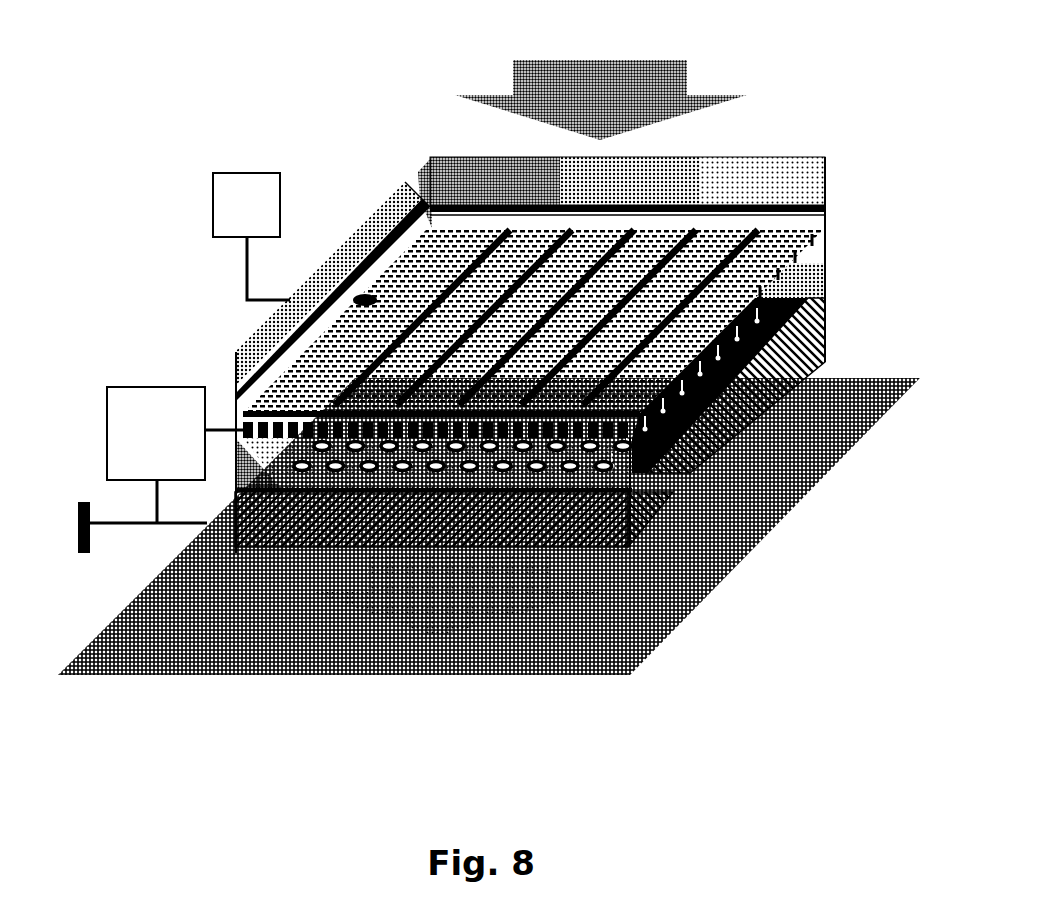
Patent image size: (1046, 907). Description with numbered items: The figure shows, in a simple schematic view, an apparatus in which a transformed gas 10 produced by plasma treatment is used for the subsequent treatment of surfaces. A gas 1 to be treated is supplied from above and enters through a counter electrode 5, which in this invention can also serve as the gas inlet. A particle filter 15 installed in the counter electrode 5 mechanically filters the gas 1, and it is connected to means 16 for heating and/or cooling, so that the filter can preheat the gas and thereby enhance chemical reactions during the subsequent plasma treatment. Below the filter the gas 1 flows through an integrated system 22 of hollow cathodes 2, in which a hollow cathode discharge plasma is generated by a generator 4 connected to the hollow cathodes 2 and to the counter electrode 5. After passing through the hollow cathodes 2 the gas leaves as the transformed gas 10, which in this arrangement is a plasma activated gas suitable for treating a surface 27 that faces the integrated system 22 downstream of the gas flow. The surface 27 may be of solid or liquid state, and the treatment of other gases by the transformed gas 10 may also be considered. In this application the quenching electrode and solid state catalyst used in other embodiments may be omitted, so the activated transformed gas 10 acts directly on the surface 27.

The gas to be treated 1 is at (688, 72).
The hollow cathode 2 is at (605, 466).
The generator 4 is at (165, 400).
The counter electrode 5 is at (770, 162).
The transformed gas 10 is at (415, 612).
The particle filter 15 is at (430, 255).
The means for heating and/or cooling 16 is at (220, 210).
The integrated system of hollow cathodes 22 is at (812, 343).
The surface 27 is at (640, 647).